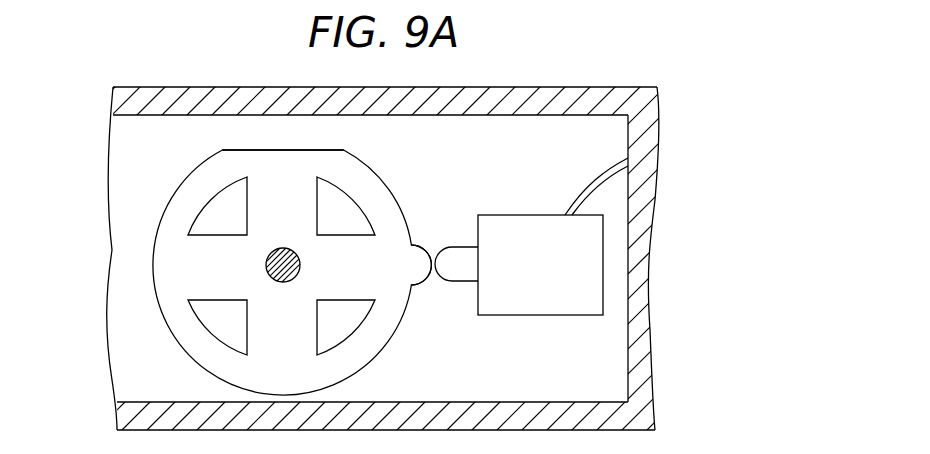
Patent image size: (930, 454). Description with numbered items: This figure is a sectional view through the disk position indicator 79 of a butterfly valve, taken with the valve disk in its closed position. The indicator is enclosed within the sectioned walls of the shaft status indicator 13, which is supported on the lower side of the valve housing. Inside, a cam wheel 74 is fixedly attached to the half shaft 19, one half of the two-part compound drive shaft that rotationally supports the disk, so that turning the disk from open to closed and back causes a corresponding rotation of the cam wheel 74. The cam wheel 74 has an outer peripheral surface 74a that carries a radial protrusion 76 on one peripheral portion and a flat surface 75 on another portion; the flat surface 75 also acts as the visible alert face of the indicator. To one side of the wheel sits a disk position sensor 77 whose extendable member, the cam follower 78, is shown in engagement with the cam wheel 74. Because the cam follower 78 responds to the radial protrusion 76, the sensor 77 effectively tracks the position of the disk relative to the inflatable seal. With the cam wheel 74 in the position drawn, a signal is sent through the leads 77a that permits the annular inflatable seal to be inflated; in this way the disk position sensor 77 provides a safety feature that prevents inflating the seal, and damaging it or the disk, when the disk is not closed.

The shaft status indicator 13 is at (548, 86).
The half shaft 19 is at (266, 263).
The cam wheel 74 is at (270, 223).
The outer peripheral surface 74a is at (372, 172).
The flat surface 75 is at (281, 149).
The radial protrusion 76 is at (417, 245).
The disk position sensor 77 is at (547, 303).
The leads 77a is at (600, 186).
The cam follower 78 is at (452, 282).
The disk position indicator 79 is at (95, 311).